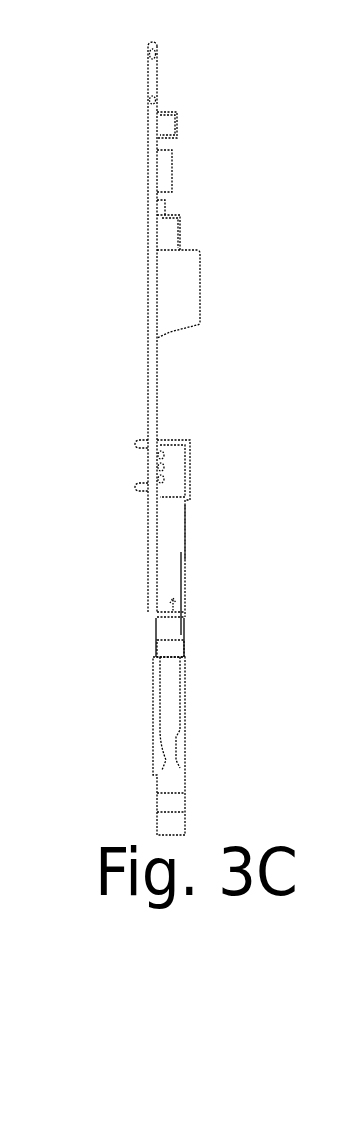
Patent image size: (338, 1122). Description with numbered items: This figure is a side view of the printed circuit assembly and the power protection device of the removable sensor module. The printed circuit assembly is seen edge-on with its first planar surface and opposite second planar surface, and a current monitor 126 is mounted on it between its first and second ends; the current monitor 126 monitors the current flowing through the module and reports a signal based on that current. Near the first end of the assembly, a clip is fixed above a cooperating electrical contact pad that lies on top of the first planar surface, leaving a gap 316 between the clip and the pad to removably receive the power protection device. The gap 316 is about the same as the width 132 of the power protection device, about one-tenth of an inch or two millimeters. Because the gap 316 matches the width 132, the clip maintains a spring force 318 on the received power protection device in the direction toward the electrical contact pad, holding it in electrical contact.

The current monitor 126 is at (200, 252).
The force 318 is at (195, 527).
The gap 316 is at (145, 626).
The width 132 is at (122, 647).